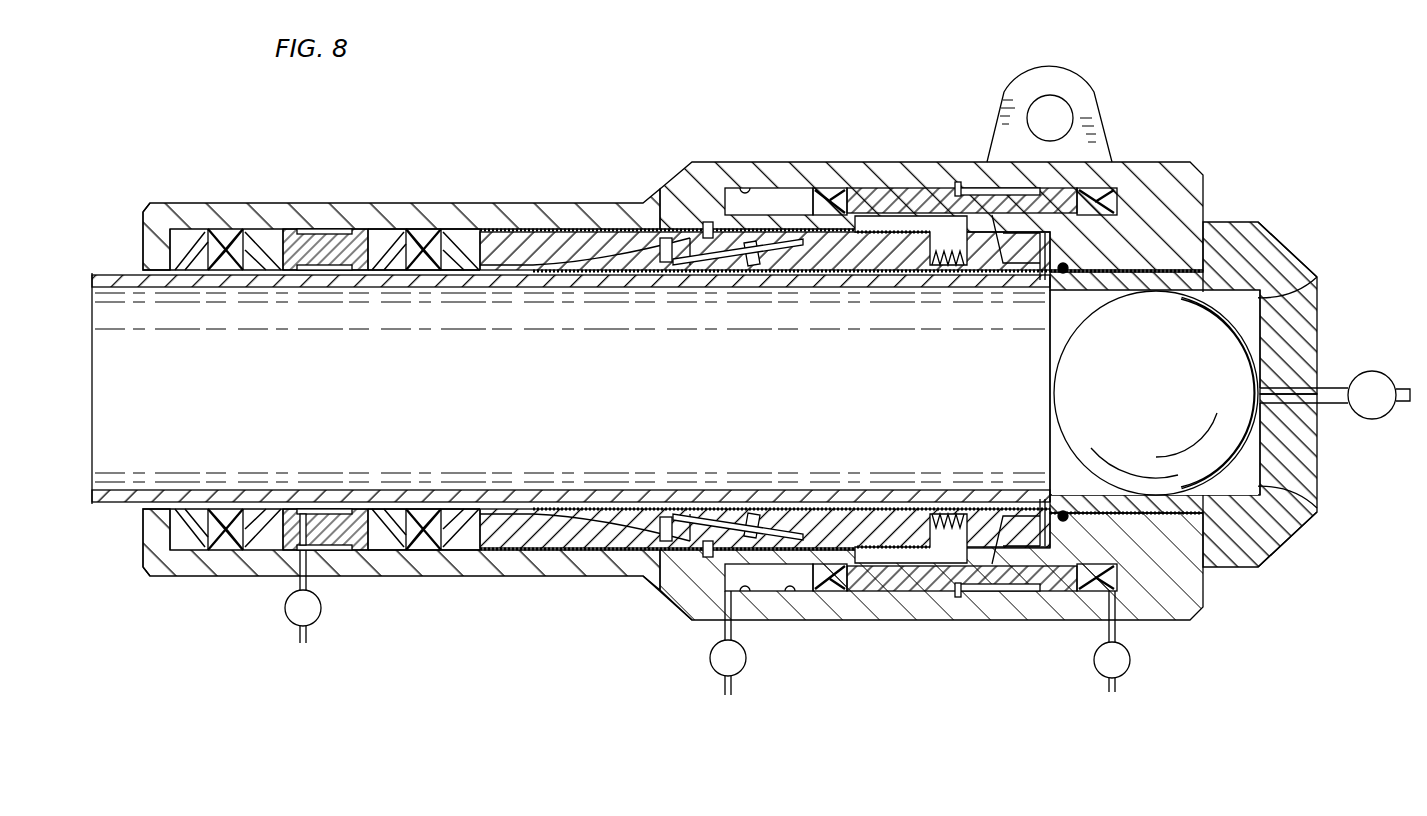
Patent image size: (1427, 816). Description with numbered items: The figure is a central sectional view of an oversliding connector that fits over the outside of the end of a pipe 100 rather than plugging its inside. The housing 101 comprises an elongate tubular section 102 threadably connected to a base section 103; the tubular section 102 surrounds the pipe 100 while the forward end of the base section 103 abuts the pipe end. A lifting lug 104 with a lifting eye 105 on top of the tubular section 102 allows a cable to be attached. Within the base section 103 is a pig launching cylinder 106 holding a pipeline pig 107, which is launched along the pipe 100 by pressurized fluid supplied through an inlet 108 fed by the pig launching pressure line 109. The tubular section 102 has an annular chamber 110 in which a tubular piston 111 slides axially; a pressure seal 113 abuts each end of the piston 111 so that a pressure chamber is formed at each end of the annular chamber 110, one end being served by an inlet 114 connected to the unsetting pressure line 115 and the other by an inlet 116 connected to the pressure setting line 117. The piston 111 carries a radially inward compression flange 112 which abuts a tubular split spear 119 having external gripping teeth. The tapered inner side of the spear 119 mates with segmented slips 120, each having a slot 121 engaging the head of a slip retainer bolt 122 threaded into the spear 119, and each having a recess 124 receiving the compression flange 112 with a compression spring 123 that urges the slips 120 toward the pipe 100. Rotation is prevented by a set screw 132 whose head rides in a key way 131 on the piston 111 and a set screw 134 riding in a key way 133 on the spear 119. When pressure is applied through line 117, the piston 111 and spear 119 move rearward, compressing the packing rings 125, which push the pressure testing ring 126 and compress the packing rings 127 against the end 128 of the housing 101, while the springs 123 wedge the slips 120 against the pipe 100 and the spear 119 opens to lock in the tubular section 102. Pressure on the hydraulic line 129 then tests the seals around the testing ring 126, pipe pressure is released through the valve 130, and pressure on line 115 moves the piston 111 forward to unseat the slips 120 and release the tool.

The pipe 100 is at (385, 280).
The housing 101 is at (1291, 548).
The tubular section 102 is at (515, 205).
The base section 103 is at (1265, 245).
The lifting lug 104 is at (1095, 130).
The lifting eye 105 is at (1060, 100).
The pig launching cylinder 106 is at (1295, 292).
The pipeline pig 107 is at (1217, 433).
The inlet 108 is at (1335, 390).
The pig launching pressure line 109 is at (1340, 404).
The annular chamber 110 is at (745, 186).
The piston 111 is at (888, 200).
The compression flange 112 is at (997, 238).
The pressure seal 113 is at (830, 195).
The inlet 114 is at (690, 598).
The unsetting pressure line 115 is at (735, 632).
The inlet 116 is at (1110, 598).
The pressure setting line 117 is at (1120, 688).
The tubular split spear 119 is at (575, 240).
The segmented slips 120 is at (650, 260).
The slot 121 is at (800, 258).
The slip retainer bolt 122 is at (752, 268).
The compression spring 123 is at (935, 265).
The recess 124 is at (942, 240).
The packing rings 125 is at (437, 240).
The pressure testing ring 126 is at (330, 245).
The packing rings 127 is at (232, 240).
The end 128 is at (152, 238).
The hydraulic line 129 is at (308, 640).
The valve 130 is at (1388, 378).
The key way 131 is at (1003, 192).
The set screw 132 is at (960, 182).
The key way 133 is at (775, 228).
The set screw 134 is at (705, 222).